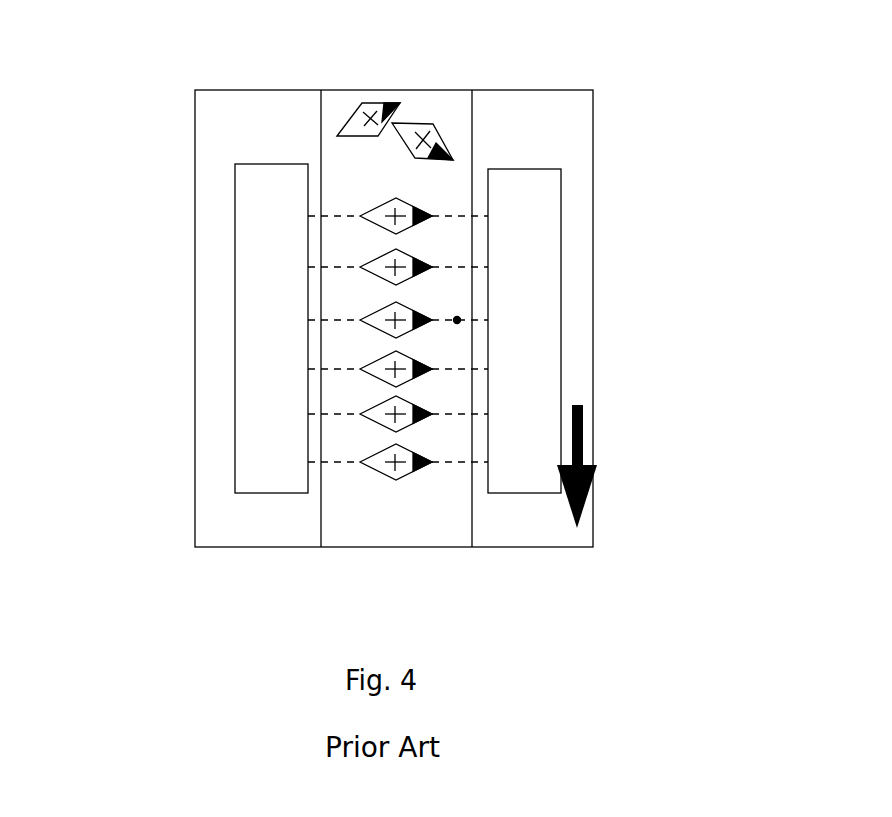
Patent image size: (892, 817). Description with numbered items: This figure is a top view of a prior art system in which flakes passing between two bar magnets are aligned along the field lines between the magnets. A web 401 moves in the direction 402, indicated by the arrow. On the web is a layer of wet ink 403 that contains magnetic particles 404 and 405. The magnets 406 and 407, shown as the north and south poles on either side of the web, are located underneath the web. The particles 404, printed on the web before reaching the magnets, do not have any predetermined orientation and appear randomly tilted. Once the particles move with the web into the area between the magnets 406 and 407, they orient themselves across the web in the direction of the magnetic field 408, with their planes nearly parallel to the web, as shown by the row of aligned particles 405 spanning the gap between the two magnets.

The web 401 is at (217, 402).
The direction 402 is at (583, 468).
The layer of wet ink 403 is at (337, 525).
The magnetic particles 404 is at (421, 130).
The magnetic particles 405 is at (367, 316).
The magnet 406 is at (257, 277).
The magnet 407 is at (543, 255).
The magnetic field 408 is at (457, 319).